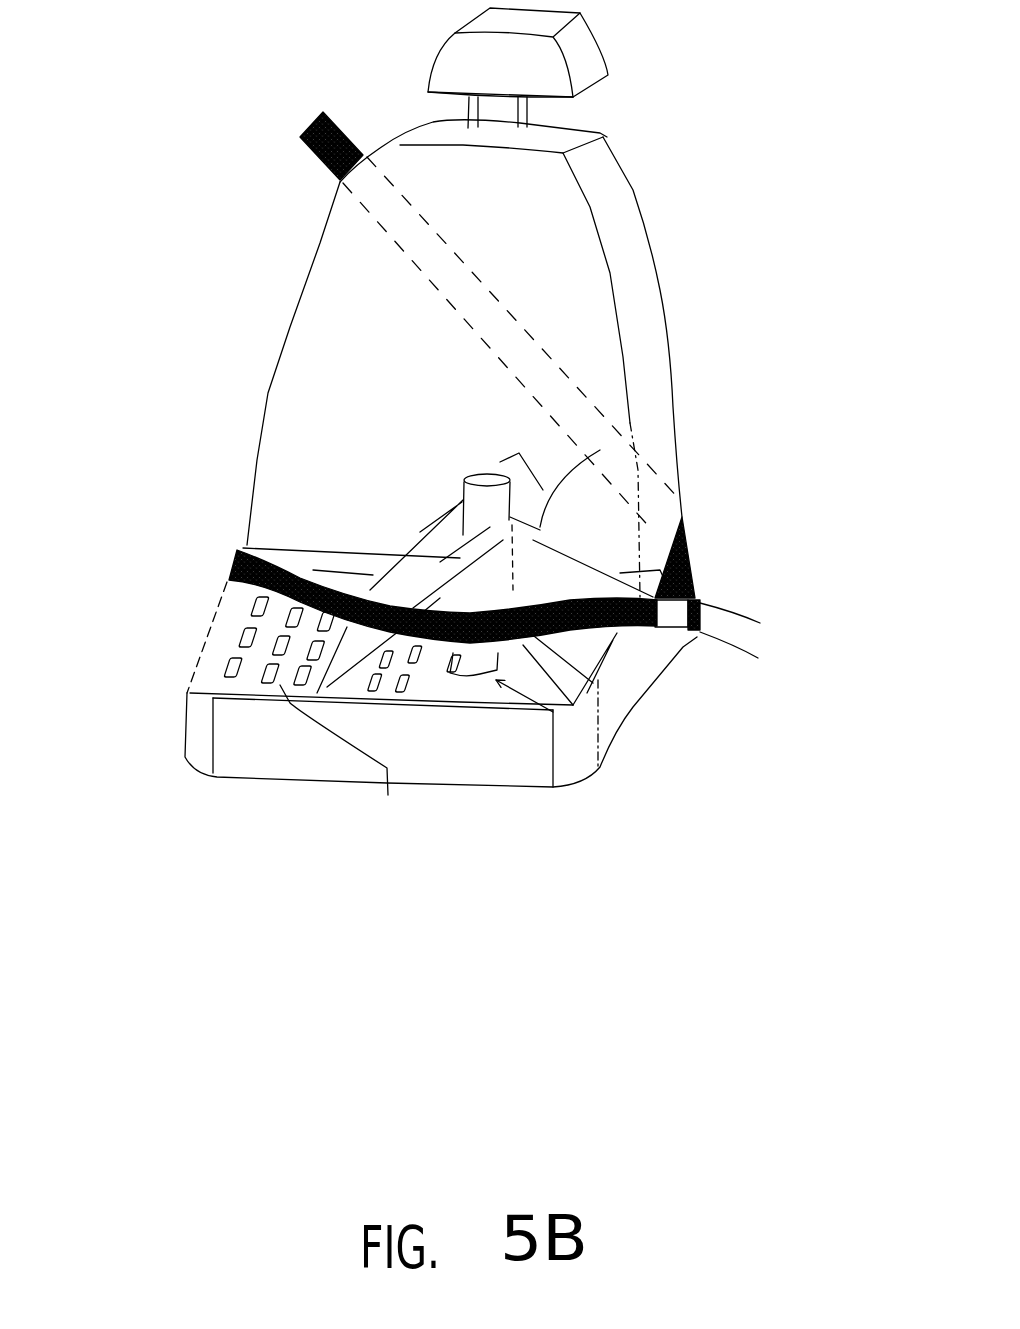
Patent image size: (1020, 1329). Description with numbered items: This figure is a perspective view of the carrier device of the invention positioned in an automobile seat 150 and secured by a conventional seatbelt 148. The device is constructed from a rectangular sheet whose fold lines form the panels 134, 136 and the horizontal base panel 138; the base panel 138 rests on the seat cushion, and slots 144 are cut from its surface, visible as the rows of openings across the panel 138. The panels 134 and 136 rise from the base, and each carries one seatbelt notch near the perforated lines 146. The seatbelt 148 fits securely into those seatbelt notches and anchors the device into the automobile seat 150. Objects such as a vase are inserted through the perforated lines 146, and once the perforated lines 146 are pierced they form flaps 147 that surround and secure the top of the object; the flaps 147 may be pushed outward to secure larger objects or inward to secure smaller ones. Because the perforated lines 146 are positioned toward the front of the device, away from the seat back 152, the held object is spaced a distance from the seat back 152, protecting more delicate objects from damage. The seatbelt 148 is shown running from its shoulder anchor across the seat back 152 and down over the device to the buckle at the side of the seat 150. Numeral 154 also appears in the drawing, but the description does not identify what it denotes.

The panel 134 is at (418, 540).
The panel 136 is at (570, 524).
The horizontal base panel 138 is at (384, 805).
The slots 144 is at (275, 640).
The perforated lines 146 is at (600, 450).
The flaps 147 is at (510, 538).
The seatbelt 148 is at (306, 171).
The seat 150 is at (633, 693).
The seat back 152 is at (577, 267).
The lower airbag flap 154 is at (553, 712).